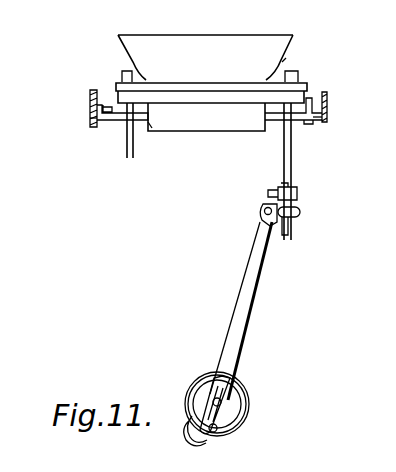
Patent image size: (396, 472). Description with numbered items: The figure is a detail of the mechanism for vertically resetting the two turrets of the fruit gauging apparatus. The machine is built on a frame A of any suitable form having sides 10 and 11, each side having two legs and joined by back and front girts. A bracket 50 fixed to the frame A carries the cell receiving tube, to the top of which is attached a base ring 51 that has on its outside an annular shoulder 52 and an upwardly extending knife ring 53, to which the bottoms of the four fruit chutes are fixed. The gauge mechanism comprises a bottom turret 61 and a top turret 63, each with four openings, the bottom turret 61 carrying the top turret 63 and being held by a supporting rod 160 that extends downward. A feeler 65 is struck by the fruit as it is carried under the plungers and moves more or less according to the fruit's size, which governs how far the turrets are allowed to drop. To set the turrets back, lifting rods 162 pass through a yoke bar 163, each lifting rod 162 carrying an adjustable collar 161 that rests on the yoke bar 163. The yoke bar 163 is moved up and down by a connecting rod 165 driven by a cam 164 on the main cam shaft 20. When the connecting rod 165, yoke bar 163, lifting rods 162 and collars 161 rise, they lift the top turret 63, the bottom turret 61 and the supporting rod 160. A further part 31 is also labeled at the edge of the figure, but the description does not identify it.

The frame side 10 is at (328, 121).
The frame side 11 is at (90, 116).
The main cam shaft 20 is at (216, 398).
The support 31 is at (388, 75).
The bracket 50 is at (272, 115).
The base ring 51 is at (152, 126).
The annular shoulder 52 is at (286, 58).
The knife ring 53 is at (205, 57).
The bottom turret 61 is at (97, 100).
The top turret 63 is at (116, 86).
The feeler 65 is at (122, 76).
The frame A is at (327, 101).
The supporting rod 160 is at (126, 157).
The adjustable collar 161 is at (297, 194).
The lifting rod 162 is at (289, 166).
The yoke bar 163 is at (300, 214).
The cam 164 is at (250, 403).
The connecting rod 165 is at (252, 298).